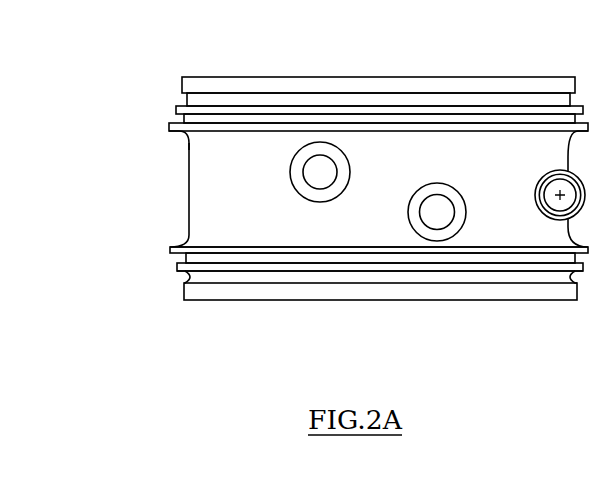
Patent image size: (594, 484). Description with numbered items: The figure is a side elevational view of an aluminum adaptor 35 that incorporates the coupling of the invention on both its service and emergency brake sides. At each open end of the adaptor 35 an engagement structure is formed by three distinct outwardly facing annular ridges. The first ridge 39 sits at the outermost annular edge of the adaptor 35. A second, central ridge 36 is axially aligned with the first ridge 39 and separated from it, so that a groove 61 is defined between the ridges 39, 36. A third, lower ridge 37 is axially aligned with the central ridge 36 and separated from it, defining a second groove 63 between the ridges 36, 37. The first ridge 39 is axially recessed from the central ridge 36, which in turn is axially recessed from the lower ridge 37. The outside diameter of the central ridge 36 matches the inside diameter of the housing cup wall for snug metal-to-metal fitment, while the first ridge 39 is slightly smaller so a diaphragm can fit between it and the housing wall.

The aluminum adaptor 35 is at (195, 178).
The second annular ridge 36 is at (175, 108).
The third annular ridge 37 is at (170, 131).
The first annular ridge 39 is at (185, 83).
The groove 61 is at (187, 100).
The second groove 63 is at (170, 128).